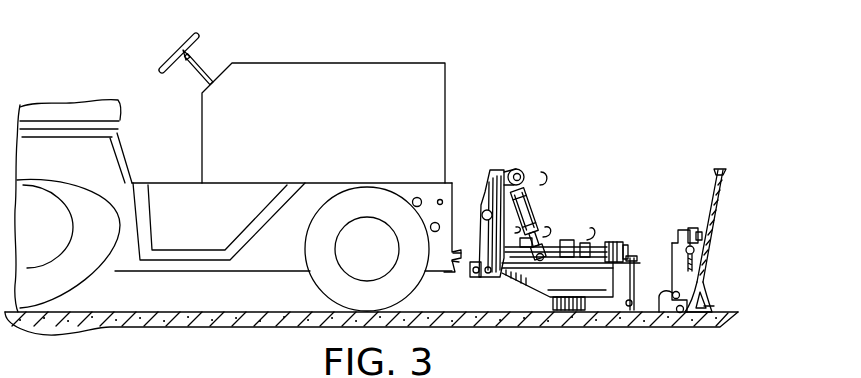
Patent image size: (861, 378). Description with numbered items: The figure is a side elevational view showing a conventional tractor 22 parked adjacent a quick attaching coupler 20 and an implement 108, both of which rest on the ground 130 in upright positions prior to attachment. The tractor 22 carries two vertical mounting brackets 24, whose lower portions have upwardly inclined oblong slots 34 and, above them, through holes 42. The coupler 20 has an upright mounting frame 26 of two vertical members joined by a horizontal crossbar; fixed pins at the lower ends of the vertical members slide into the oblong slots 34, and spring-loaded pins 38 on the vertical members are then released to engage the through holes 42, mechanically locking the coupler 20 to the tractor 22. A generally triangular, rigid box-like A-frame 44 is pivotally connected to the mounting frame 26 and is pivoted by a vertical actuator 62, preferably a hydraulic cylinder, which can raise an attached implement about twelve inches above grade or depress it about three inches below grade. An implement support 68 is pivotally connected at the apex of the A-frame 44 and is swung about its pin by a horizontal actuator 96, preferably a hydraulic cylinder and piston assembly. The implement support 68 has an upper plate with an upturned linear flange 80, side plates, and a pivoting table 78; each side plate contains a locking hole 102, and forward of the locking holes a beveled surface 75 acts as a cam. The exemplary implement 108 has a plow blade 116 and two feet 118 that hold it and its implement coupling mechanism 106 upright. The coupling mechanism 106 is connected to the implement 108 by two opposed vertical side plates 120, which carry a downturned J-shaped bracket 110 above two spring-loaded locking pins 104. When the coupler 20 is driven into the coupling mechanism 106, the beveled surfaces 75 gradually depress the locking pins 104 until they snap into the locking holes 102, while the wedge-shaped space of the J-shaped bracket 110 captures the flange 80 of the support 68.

The quick attaching coupler 20 is at (608, 256).
The tractor 22 is at (138, 85).
The mounting brackets 24 is at (407, 184).
The mounting frame 26 is at (487, 197).
The oblong slots 34 is at (446, 275).
The spring-loaded pins 38 is at (483, 215).
The through holes 42 is at (440, 199).
The A-frame 44 is at (530, 288).
The vertical actuator 62 is at (528, 183).
The implement support 68 is at (622, 244).
The beveled surface 75 is at (636, 263).
The pivoting table 78 is at (598, 322).
The flange 80 is at (636, 262).
The horizontal actuator 96 is at (557, 230).
The locking hole 102 is at (644, 312).
The locking pins 104 is at (660, 313).
The implement coupling mechanism 106 is at (689, 228).
The implement 108 is at (702, 194).
The J-shaped bracket 110 is at (703, 247).
The plow blade 116 is at (709, 316).
The feet 118 is at (690, 313).
The vertical side plates 120 is at (682, 247).
The ground 130 is at (257, 326).